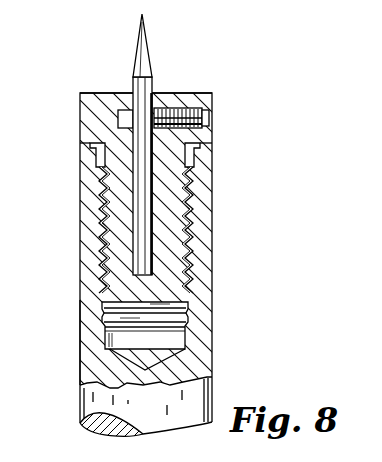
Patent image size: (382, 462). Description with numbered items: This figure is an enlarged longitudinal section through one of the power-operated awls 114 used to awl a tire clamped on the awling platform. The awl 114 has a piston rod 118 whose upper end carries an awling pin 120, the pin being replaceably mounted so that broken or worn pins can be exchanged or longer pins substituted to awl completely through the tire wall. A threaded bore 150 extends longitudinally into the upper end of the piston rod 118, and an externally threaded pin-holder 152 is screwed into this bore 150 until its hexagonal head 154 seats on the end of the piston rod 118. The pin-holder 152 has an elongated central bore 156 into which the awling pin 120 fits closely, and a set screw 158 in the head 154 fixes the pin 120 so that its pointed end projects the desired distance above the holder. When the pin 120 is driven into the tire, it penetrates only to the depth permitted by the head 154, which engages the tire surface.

The power-operated awl 114 is at (218, 351).
The piston rod 118 is at (90, 336).
The awling pin 120 is at (153, 77).
The threaded bore 150 is at (185, 318).
The pin-holder 152 is at (122, 262).
The hexagonal head 154 is at (100, 103).
The elongated central bore 156 is at (157, 218).
The set screw 158 is at (221, 116).